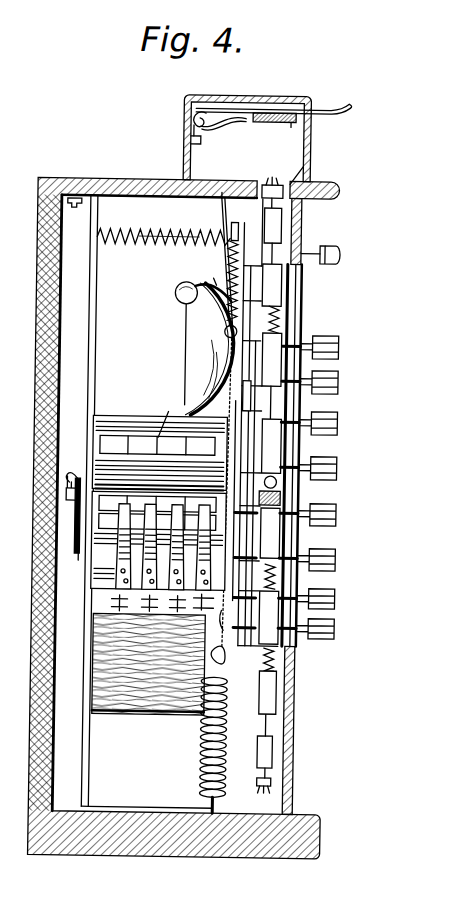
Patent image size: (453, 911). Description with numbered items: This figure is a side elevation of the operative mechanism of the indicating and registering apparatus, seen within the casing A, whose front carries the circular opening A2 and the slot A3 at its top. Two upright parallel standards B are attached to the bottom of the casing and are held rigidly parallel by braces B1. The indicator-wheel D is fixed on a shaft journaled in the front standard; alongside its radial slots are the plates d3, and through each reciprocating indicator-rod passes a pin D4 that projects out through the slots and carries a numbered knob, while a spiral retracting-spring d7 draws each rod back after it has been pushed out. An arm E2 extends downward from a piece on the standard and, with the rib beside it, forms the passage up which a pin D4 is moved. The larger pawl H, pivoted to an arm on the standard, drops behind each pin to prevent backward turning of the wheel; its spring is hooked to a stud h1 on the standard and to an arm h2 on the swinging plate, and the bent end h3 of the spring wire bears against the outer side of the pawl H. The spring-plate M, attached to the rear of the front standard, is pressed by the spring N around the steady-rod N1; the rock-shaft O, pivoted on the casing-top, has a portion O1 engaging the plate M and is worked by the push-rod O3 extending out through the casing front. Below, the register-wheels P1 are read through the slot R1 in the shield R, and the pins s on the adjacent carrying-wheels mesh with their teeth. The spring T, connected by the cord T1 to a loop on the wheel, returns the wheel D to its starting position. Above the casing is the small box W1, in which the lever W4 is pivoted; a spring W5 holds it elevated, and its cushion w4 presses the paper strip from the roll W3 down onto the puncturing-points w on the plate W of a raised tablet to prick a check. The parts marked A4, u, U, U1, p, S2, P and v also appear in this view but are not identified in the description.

The upright standard B is at (90, 672).
The brace B1 is at (186, 652).
The lever W4 is at (336, 113).
The box or casing W1 is at (182, 140).
The spring W5 is at (228, 122).
The roll of paper strip W3 is at (268, 122).
The cushion w4 is at (291, 127).
The upper housing connection A4 is at (310, 168).
The puncturing-points w is at (277, 180).
The casing A is at (304, 230).
The plate W is at (296, 291).
The arm E2 is at (298, 326).
The offset or slot A3 is at (304, 275).
The circular opening A2 is at (300, 440).
The pin or rod D4 is at (298, 548).
The spiral retracting-spring d7 is at (286, 577).
The indicator-wheel D is at (292, 398).
The plates d3 is at (250, 412).
The push-rod O3 is at (342, 250).
The rock-shaft O is at (232, 200).
The portion of rock-shaft O1 is at (228, 246).
The arm h2 is at (240, 236).
The spring-plate M is at (221, 218).
The spring N is at (150, 229).
The guide or steady rod N1 is at (154, 246).
The ball weight u is at (177, 294).
The pawl H is at (220, 322).
The arm pivot U is at (211, 273).
The arc sector U1 is at (188, 366).
The spring wire end h3 is at (206, 364).
The projection or stud h1 is at (209, 375).
The slot R1 is at (142, 414).
The register pointer p is at (165, 418).
The shield or plate R is at (159, 527).
The pins s is at (117, 604).
The cord T1 is at (214, 611).
The slide plate S2 is at (195, 600).
The pawl P is at (84, 478).
The pawl pin v is at (66, 496).
The register-wheels P1 is at (96, 528).
The spring T is at (196, 744).